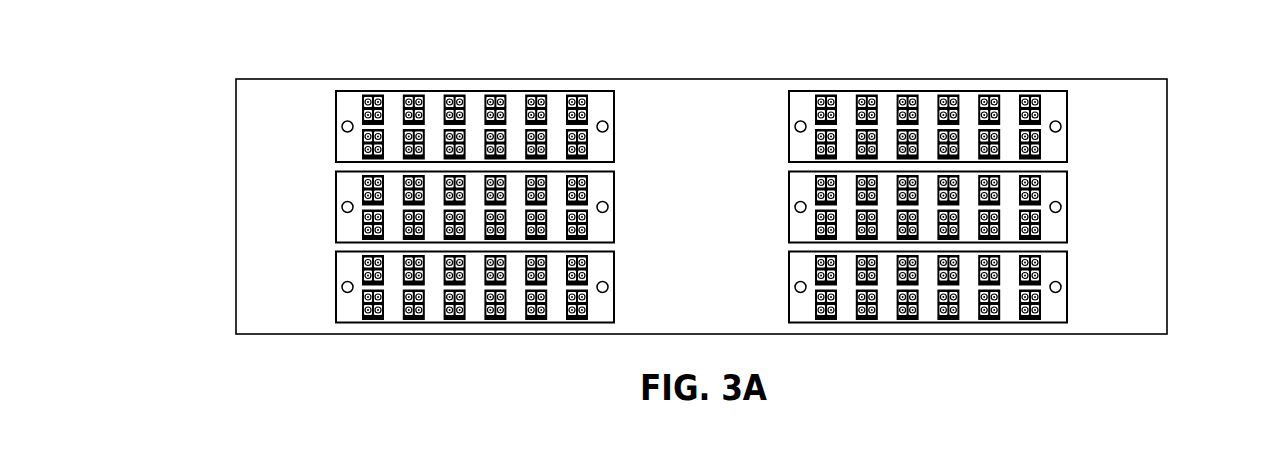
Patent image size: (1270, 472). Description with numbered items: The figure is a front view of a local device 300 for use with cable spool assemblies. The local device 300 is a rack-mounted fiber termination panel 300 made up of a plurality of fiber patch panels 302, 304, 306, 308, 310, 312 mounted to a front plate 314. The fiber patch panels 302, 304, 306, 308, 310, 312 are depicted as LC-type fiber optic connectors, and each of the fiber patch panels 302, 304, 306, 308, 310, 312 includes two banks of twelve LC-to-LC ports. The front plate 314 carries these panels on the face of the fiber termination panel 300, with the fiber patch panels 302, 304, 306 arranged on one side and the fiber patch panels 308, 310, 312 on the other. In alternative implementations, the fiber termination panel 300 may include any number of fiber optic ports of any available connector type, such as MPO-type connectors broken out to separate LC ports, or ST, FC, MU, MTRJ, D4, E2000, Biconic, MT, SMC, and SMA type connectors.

The local device 300 is at (220, 92).
The fiber patch panel 302 is at (336, 147).
The fiber patch panel 304 is at (336, 230).
The fiber patch panel 306 is at (336, 307).
The fiber patch panel 308 is at (1068, 153).
The fiber patch panel 310 is at (1067, 230).
The fiber patch panel 312 is at (1067, 309).
The front plate 314 is at (1107, 100).